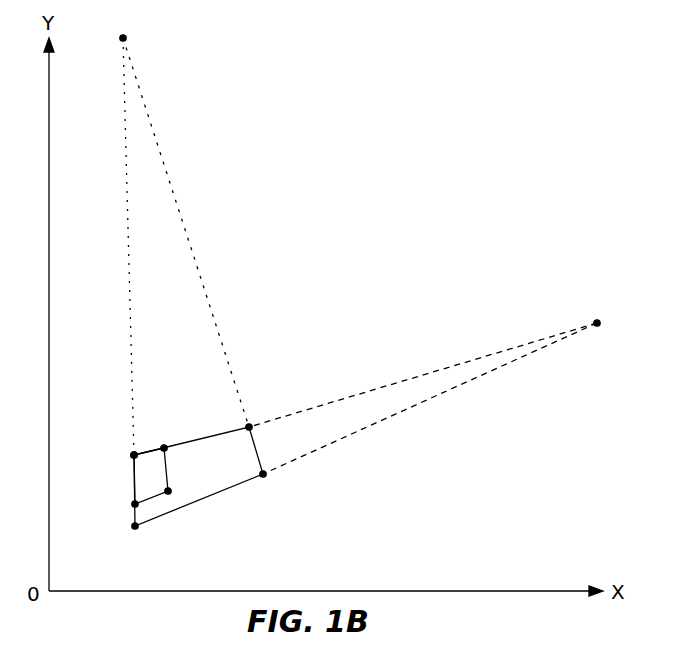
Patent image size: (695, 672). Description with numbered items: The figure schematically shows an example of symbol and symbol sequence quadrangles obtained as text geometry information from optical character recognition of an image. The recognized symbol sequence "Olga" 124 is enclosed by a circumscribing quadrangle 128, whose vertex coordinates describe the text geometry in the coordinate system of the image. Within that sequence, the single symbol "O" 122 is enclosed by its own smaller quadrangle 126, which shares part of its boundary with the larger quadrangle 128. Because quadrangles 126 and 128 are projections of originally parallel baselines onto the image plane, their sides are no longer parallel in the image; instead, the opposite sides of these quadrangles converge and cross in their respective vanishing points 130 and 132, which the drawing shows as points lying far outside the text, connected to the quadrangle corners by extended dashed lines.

The symbol "O" 122 is at (130, 472).
The symbol sequence "Olga" 124 is at (197, 494).
The quadrangle circumscribing symbol "O" 126 is at (157, 509).
The circumscribing quadrangle of symbol sequence 128 is at (138, 439).
The vanishing point 130 is at (600, 321).
The vanishing point 132 is at (126, 35).